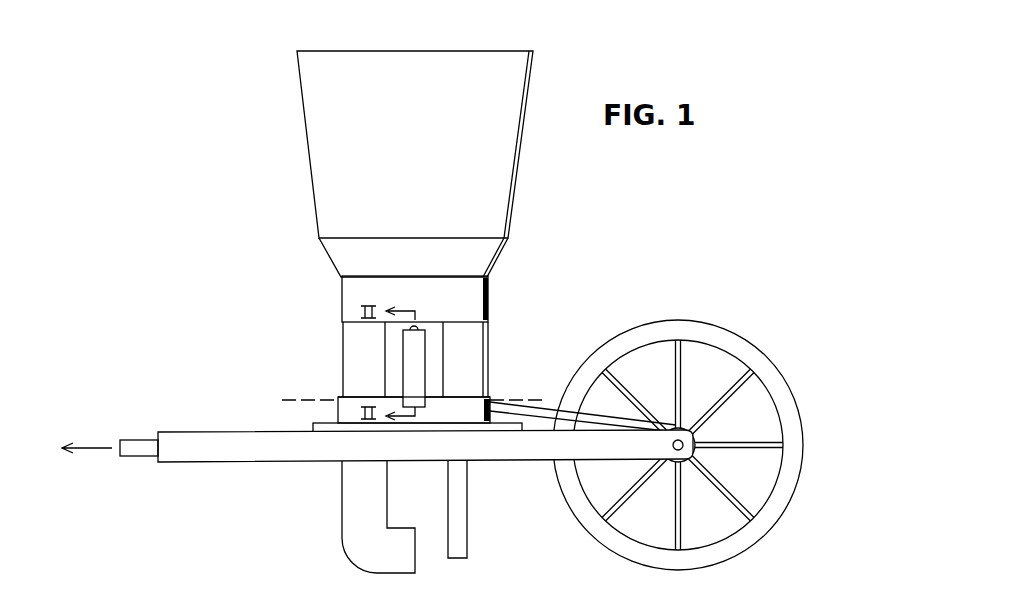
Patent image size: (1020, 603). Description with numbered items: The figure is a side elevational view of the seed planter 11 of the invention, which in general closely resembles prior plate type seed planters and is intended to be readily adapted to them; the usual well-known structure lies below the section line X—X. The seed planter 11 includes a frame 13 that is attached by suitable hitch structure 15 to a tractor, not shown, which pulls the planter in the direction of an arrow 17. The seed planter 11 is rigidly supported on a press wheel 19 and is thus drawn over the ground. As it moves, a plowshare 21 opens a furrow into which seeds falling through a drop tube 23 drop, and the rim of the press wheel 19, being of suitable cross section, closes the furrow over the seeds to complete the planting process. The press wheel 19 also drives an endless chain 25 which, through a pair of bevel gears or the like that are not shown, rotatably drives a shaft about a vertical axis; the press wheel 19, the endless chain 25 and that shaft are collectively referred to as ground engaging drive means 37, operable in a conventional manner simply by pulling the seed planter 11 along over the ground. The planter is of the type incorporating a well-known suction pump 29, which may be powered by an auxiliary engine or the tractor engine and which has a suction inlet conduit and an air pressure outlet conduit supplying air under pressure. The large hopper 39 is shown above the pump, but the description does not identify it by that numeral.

The seed planter 11 is at (112, 148).
The frame 13 is at (257, 448).
The hitch structure 15 is at (143, 448).
The arrow 17 is at (88, 450).
The press wheel 19 is at (793, 435).
The plowshare 21 is at (352, 547).
The drop tube 23 is at (458, 527).
The endless chain 25 is at (543, 415).
The suction pump 29 is at (410, 353).
The ground engaging drive means 37 is at (606, 323).
The hopper 39 is at (413, 144).